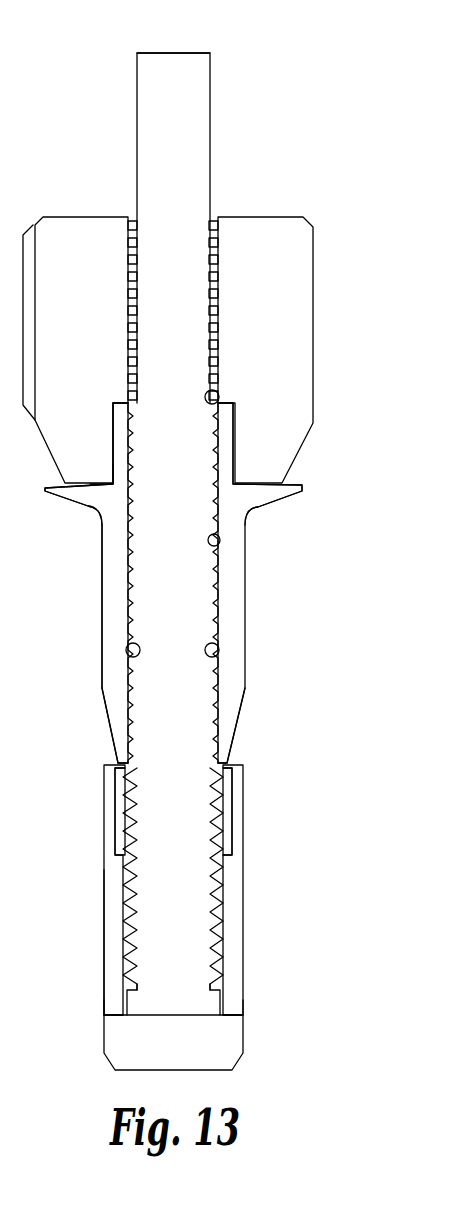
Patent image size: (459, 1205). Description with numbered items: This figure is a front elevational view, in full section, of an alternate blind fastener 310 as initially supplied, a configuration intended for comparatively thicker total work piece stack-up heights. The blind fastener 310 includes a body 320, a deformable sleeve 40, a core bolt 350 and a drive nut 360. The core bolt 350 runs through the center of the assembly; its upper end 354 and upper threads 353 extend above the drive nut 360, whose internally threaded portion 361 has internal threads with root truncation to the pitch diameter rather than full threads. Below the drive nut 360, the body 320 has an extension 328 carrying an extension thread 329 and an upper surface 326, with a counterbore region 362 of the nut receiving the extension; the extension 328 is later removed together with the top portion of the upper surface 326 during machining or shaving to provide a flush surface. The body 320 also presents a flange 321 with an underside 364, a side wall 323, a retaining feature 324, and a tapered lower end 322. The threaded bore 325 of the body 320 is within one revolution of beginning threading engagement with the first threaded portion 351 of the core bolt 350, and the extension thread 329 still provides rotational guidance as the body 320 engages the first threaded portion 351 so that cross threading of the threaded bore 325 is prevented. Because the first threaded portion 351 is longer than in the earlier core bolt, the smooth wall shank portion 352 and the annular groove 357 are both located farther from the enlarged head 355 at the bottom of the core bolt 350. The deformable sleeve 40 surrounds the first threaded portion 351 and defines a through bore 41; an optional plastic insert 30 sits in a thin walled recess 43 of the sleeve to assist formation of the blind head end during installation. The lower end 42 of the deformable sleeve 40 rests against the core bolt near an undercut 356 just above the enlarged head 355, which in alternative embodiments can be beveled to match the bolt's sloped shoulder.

The blind fastener 310 is at (232, 64).
The core bolt 350 is at (181, 53).
The threaded rod 354 is at (212, 135).
The rod external threads 353 is at (137, 353).
The internally threaded portion 361 is at (213, 250).
The drive nut 360 is at (70, 262).
The extension thread 329 is at (219, 397).
The extension 328 is at (227, 438).
The counterbore of nut 362 is at (118, 428).
The upper surface 326 is at (100, 483).
The flange underside 364 is at (100, 487).
The flange 321 is at (268, 493).
The body 320 is at (120, 548).
The middle retaining ring 324 is at (222, 547).
The body side wall 323 is at (102, 590).
The annular groove 357 is at (130, 652).
The threaded bore 325 is at (213, 660).
The tapered lower end of body 322 is at (112, 742).
The smooth wall shank portion 352 is at (228, 745).
The deformable sleeve 40 is at (112, 893).
The thin walled recess 43 is at (120, 818).
The plastic insert 30 is at (228, 828).
The first threaded portion 351 is at (220, 947).
The through bore 41 is at (128, 948).
The rod undercut 356 is at (105, 1003).
The lower end 42 is at (232, 1025).
The enlarged head 355 is at (200, 1050).